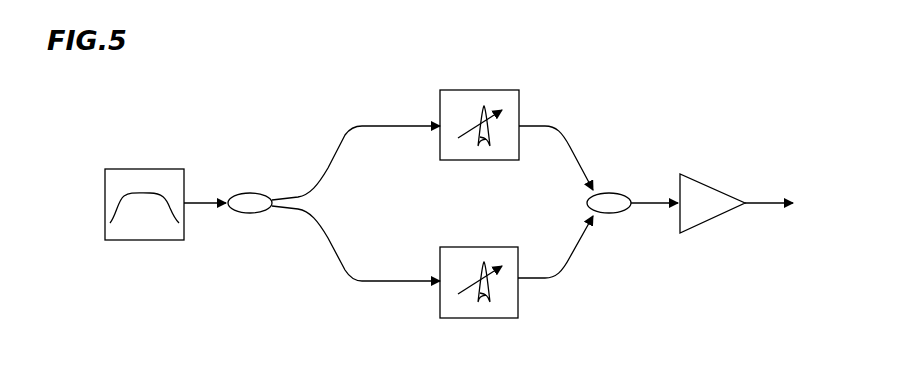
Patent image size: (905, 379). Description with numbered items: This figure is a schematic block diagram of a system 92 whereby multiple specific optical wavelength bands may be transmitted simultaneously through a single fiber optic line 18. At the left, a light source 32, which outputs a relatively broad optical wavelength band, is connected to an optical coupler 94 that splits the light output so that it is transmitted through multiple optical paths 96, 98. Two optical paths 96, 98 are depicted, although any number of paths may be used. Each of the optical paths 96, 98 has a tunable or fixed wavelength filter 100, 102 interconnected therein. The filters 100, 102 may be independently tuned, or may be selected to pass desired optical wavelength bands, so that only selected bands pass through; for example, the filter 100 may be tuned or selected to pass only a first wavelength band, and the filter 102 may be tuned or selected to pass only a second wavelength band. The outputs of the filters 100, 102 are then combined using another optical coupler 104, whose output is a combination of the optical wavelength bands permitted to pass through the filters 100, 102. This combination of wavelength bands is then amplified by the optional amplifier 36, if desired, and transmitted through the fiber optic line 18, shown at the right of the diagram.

The system 92 is at (637, 80).
The light source 32 is at (138, 168).
The optical coupler 94 is at (252, 192).
The optical path 96 is at (383, 124).
The optical path 98 is at (345, 276).
The wavelength filter 100 is at (477, 89).
The wavelength filter 102 is at (519, 298).
The optical coupler 104 is at (612, 192).
The amplifier 36 is at (727, 190).
The fiber optic line 18 is at (762, 204).